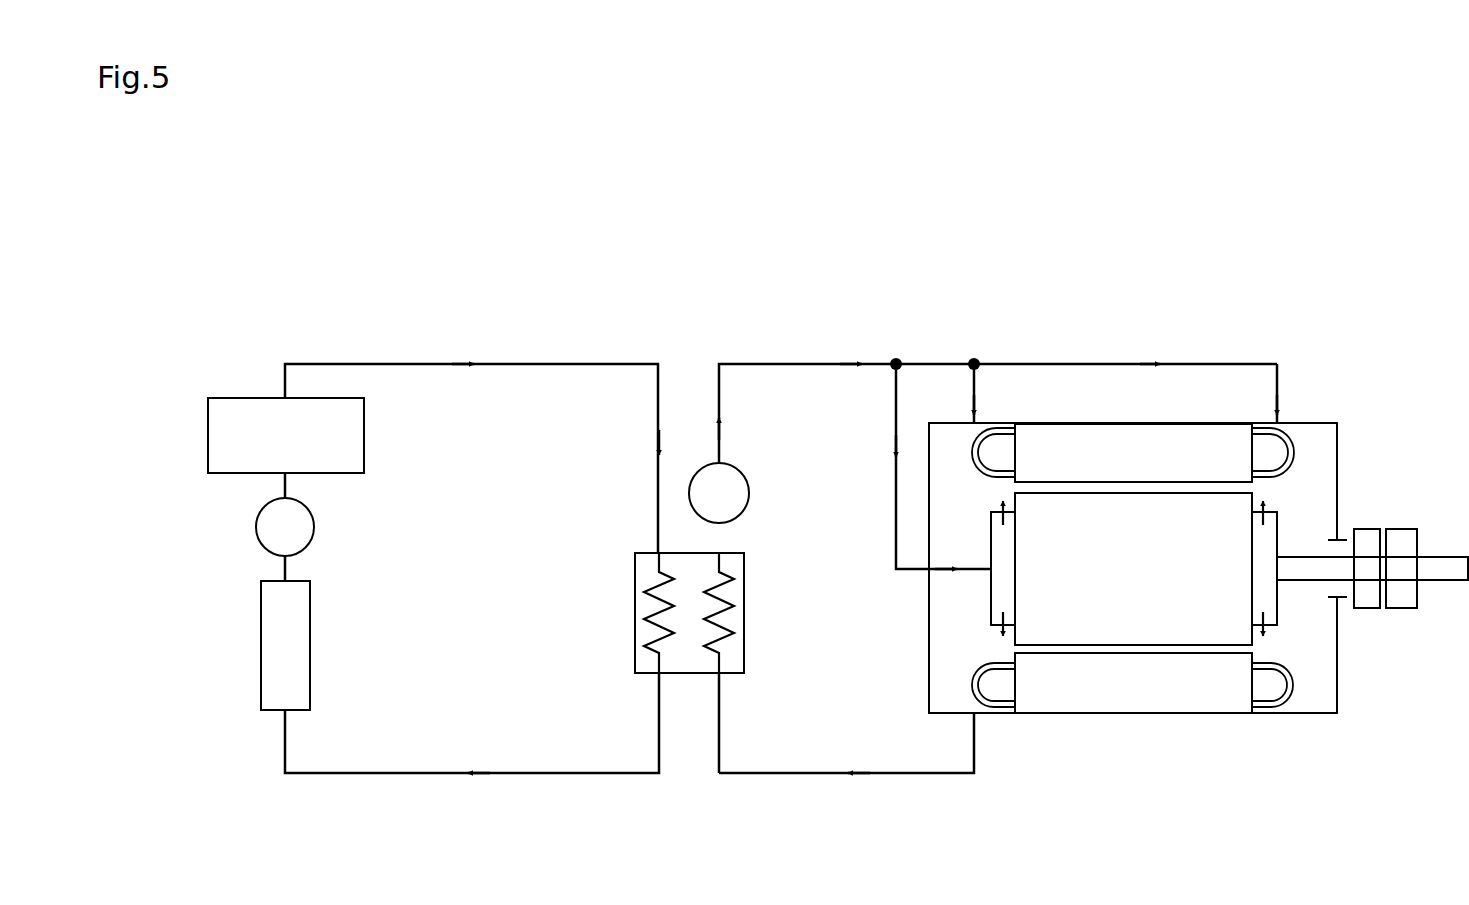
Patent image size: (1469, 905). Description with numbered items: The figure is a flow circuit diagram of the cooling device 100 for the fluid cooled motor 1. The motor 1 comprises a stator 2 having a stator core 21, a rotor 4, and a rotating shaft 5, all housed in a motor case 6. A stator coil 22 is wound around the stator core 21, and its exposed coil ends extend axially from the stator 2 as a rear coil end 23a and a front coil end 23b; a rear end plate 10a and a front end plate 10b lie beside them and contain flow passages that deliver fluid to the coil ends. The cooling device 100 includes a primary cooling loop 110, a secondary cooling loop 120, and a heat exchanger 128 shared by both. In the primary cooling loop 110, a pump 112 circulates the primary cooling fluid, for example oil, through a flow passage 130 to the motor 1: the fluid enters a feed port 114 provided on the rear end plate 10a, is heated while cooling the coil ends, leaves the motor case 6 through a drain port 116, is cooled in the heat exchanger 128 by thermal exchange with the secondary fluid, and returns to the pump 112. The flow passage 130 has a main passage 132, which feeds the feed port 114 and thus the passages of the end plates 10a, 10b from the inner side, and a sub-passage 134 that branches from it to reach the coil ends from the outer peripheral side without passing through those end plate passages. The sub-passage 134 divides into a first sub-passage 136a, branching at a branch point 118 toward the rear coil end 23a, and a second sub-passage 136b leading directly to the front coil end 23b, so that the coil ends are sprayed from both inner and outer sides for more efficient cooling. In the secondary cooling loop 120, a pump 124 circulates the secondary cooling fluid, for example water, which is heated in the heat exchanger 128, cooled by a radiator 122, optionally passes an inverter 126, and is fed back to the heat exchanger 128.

The fluid cooled motor 1 is at (1374, 429).
The stator 2 is at (1176, 392).
The rotor 4 is at (1203, 630).
The rotating shaft 5 is at (1297, 556).
The motor case 6 is at (1337, 688).
The rear end plate 10a is at (991, 620).
The front end plate 10b is at (1277, 608).
The stator core 21 is at (1100, 697).
The stator coil 22 is at (1003, 708).
The rear coil end 23a is at (1003, 436).
The front coil end 23b is at (1294, 446).
The cooling device 100 is at (797, 263).
The primary cooling loop 110 is at (1053, 308).
The pump 112 is at (700, 462).
The feed port 114 is at (991, 572).
The drain port 116 is at (974, 718).
The branch point 118 is at (972, 360).
The secondary cooling loop 120 is at (535, 333).
The radiator 122 is at (261, 600).
The pump 124 is at (258, 525).
The inverter 126 is at (232, 397).
The heat exchanger 128 is at (694, 674).
The flow passage 130 is at (775, 363).
The main passage 132 is at (895, 512).
The sub-passage 134 is at (1100, 363).
The first sub-passage 136a is at (970, 393).
The second sub-passage 136b is at (1278, 386).